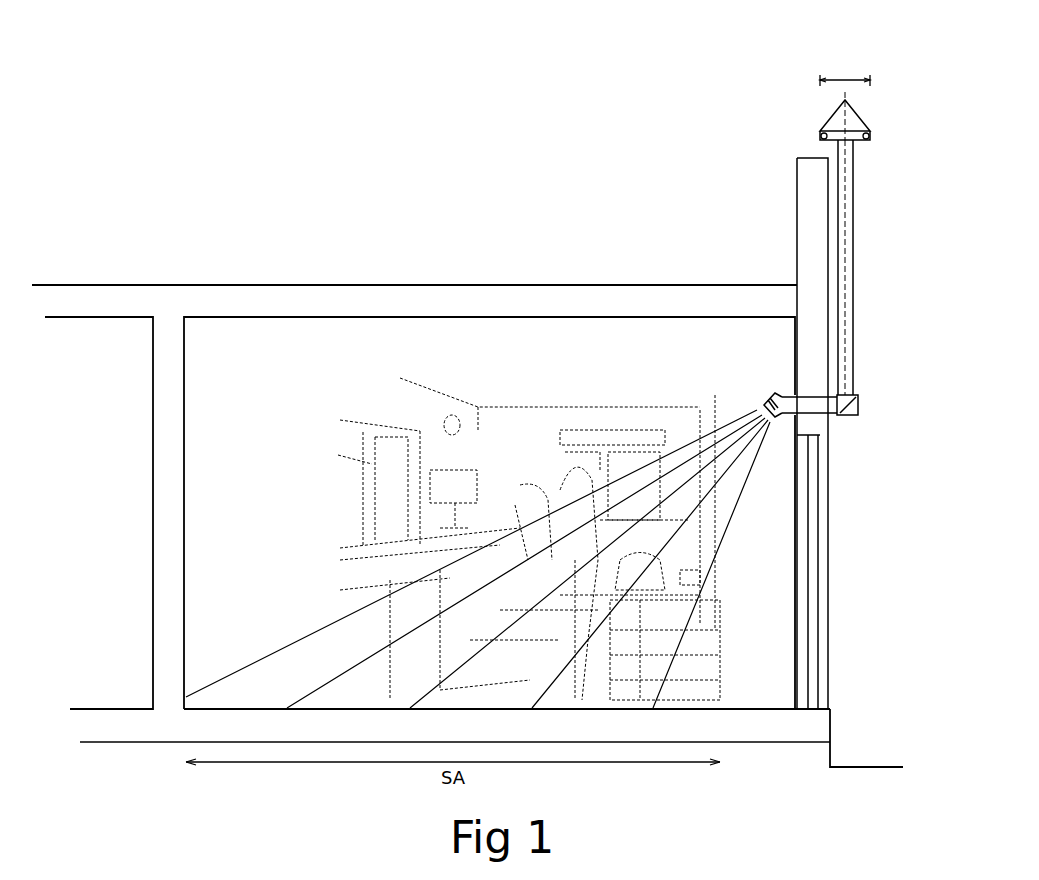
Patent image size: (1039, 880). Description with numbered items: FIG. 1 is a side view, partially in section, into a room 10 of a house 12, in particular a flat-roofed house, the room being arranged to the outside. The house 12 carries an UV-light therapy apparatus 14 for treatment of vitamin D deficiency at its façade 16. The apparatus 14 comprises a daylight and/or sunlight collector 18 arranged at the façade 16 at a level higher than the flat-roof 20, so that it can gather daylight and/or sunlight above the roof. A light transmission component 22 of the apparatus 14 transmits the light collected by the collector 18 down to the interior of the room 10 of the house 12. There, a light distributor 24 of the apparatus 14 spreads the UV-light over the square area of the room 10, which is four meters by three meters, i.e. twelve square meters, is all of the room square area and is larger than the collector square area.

The room 10 is at (254, 432).
The house 12 is at (104, 250).
The UV-light therapy apparatus 14 is at (599, 364).
The façade 16 is at (835, 616).
The daylight and/or sunlight collector 18 is at (873, 135).
The flat-roof 20 is at (466, 282).
The light transmission component 22 is at (862, 398).
The light distributor 24 is at (775, 393).